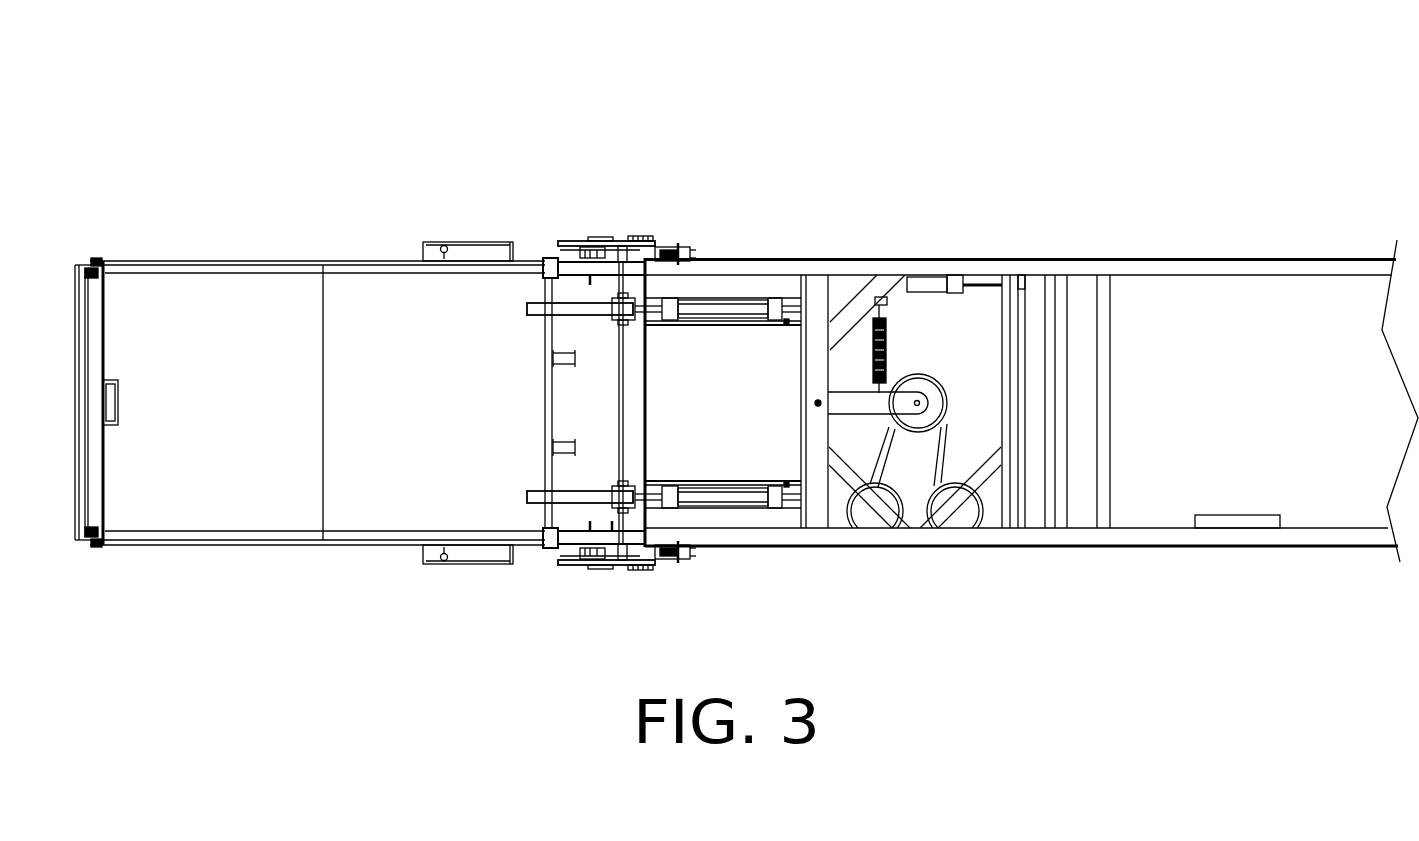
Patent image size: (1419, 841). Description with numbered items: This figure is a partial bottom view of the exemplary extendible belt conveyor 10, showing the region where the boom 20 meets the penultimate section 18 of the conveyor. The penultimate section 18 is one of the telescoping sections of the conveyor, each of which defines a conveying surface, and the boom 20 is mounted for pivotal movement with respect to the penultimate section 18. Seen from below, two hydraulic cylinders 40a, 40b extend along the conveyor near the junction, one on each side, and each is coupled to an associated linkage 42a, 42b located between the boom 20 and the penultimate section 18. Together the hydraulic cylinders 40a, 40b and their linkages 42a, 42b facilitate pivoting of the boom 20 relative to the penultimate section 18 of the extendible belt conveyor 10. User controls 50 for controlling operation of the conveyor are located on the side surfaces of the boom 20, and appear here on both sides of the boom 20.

The extendible belt conveyor 10 is at (128, 98).
The penultimate section 18 is at (1024, 258).
The boom 20 is at (238, 259).
The user controls 50 is at (468, 241).
The linkage 42a is at (563, 490).
The linkage 42b is at (572, 280).
The hydraulic cylinder 40a is at (722, 506).
The hydraulic cylinder 40b is at (720, 300).